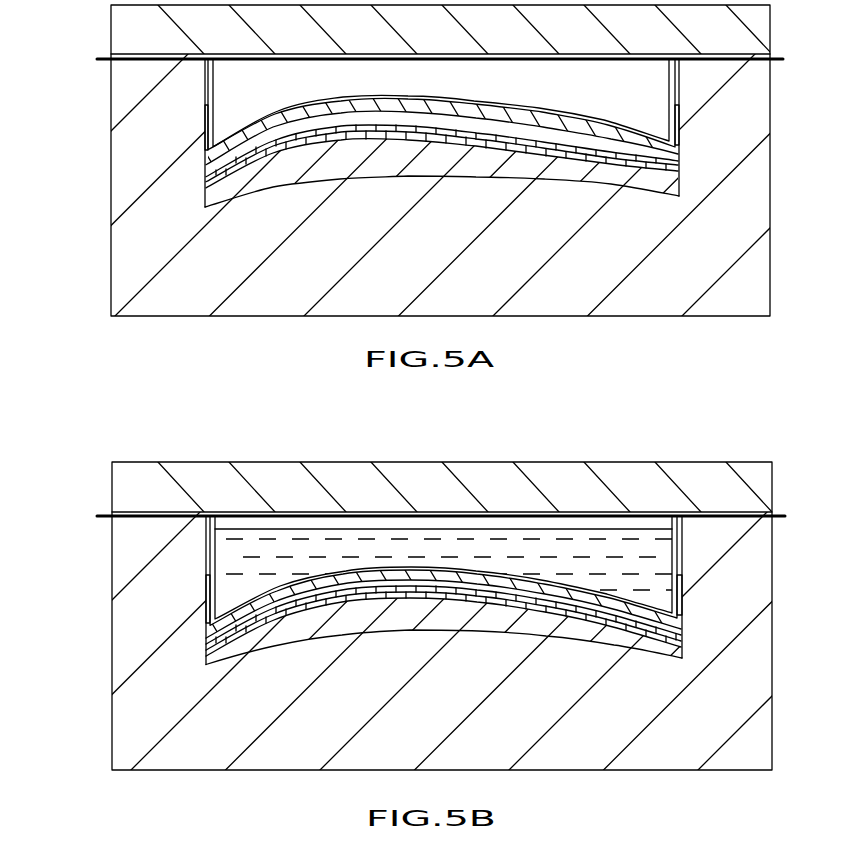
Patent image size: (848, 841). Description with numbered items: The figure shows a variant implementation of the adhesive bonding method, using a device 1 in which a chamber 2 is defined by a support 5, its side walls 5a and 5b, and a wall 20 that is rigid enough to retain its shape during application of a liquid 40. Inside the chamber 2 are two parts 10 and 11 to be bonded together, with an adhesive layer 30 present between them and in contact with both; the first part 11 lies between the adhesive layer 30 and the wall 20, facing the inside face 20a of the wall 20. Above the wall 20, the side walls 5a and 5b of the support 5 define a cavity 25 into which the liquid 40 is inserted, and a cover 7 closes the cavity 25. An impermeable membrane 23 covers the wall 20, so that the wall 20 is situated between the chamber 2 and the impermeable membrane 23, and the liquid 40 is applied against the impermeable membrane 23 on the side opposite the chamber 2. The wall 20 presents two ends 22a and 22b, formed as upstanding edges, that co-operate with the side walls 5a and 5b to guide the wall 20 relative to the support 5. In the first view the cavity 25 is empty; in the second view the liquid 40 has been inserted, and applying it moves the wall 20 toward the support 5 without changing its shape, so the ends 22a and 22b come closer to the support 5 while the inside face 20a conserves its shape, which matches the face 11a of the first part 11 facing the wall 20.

In FIG. 5A, the device 1 is at (82, 256).
In FIG. 5B, the device 1 is at (82, 710).
In FIG. 5A, the chamber 2 is at (443, 146).
In FIG. 5B, the chamber 2 is at (442, 606).
In FIG. 5A, the support 5 is at (445, 225).
In FIG. 5B, the support 5 is at (432, 717).
In FIG. 5A, the side wall 5a is at (140, 95).
In FIG. 5B, the side wall 5a is at (140, 551).
In FIG. 5A, the side wall 5b is at (740, 95).
In FIG. 5B, the side wall 5b is at (740, 550).
In FIG. 5A, the cover 7 is at (133, 52).
In FIG. 5B, the cover 7 is at (133, 510).
In FIG. 5A, the part 10 is at (540, 168).
In FIG. 5B, the part 10 is at (480, 625).
In FIG. 5A, the first part 11 is at (680, 185).
In FIG. 5B, the first part 11 is at (470, 634).
In FIG. 5B, the face 11a is at (572, 605).
In FIG. 5A, the wall 20 is at (205, 163).
In FIG. 5B, the wall 20 is at (207, 633).
In FIG. 5A, the inside face 20a is at (272, 163).
In FIG. 5B, the inside face 20a is at (282, 625).
In FIG. 5A, the end 22a is at (204, 117).
In FIG. 5B, the end 22a is at (205, 580).
In FIG. 5A, the end 22b is at (680, 118).
In FIG. 5B, the end 22b is at (683, 582).
In FIG. 5A, the impermeable membrane 23 is at (216, 84).
In FIG. 5B, the impermeable membrane 23 is at (217, 549).
In FIG. 5A, the cavity 25 is at (456, 88).
In FIG. 5B, the cavity 25 is at (443, 525).
In FIG. 5A, the adhesive layer 30 is at (208, 197).
In FIG. 5B, the adhesive layer 30 is at (658, 648).
In FIG. 5B, the liquid 40 is at (547, 557).